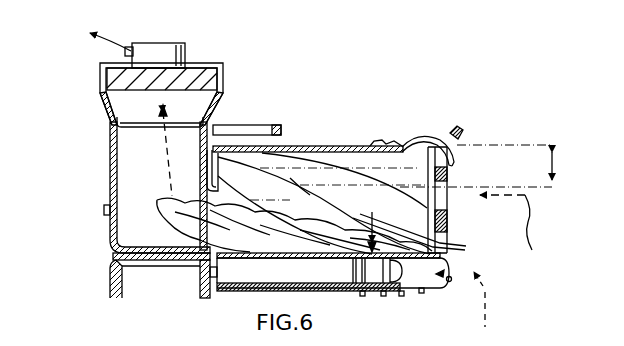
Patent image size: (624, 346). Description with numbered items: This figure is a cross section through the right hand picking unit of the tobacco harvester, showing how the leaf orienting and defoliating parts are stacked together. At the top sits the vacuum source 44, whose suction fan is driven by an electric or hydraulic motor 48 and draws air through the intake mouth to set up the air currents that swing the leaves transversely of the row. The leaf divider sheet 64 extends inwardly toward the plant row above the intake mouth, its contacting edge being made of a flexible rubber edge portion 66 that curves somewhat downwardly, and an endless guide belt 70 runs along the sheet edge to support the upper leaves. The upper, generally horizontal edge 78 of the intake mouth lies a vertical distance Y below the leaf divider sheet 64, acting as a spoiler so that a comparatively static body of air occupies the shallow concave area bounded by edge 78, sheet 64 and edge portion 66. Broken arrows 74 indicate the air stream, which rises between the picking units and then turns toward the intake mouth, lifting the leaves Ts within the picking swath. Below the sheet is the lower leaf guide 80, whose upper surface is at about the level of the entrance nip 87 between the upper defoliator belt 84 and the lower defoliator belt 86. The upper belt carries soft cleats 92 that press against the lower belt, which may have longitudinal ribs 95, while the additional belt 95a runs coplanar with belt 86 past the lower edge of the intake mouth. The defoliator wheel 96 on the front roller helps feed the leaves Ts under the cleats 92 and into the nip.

The vacuum source 44 is at (92, 62).
The electric or hydraulic motor 48 is at (157, 50).
The endless guide belt 70 is at (281, 131).
The leaf divider sheet 64 is at (333, 143).
The flexible rubber edge portion 66 is at (456, 162).
The defoliator wheel 96 is at (452, 182).
The upper edge of intake mouth 78 is at (220, 186).
The cleat 92 is at (305, 182).
The upper defoliator belt 84 is at (320, 222).
The entrance nip 87 is at (382, 231).
The lower leaf guide 80 is at (332, 285).
The additional belt 95a is at (281, 258).
The rib 95 is at (360, 292).
The lower defoliator belt 86 is at (394, 292).
The broken arrows 74 is at (485, 290).
The leaves within the picking swath Ts is at (450, 250).
The vertical distance Y is at (484, 166).